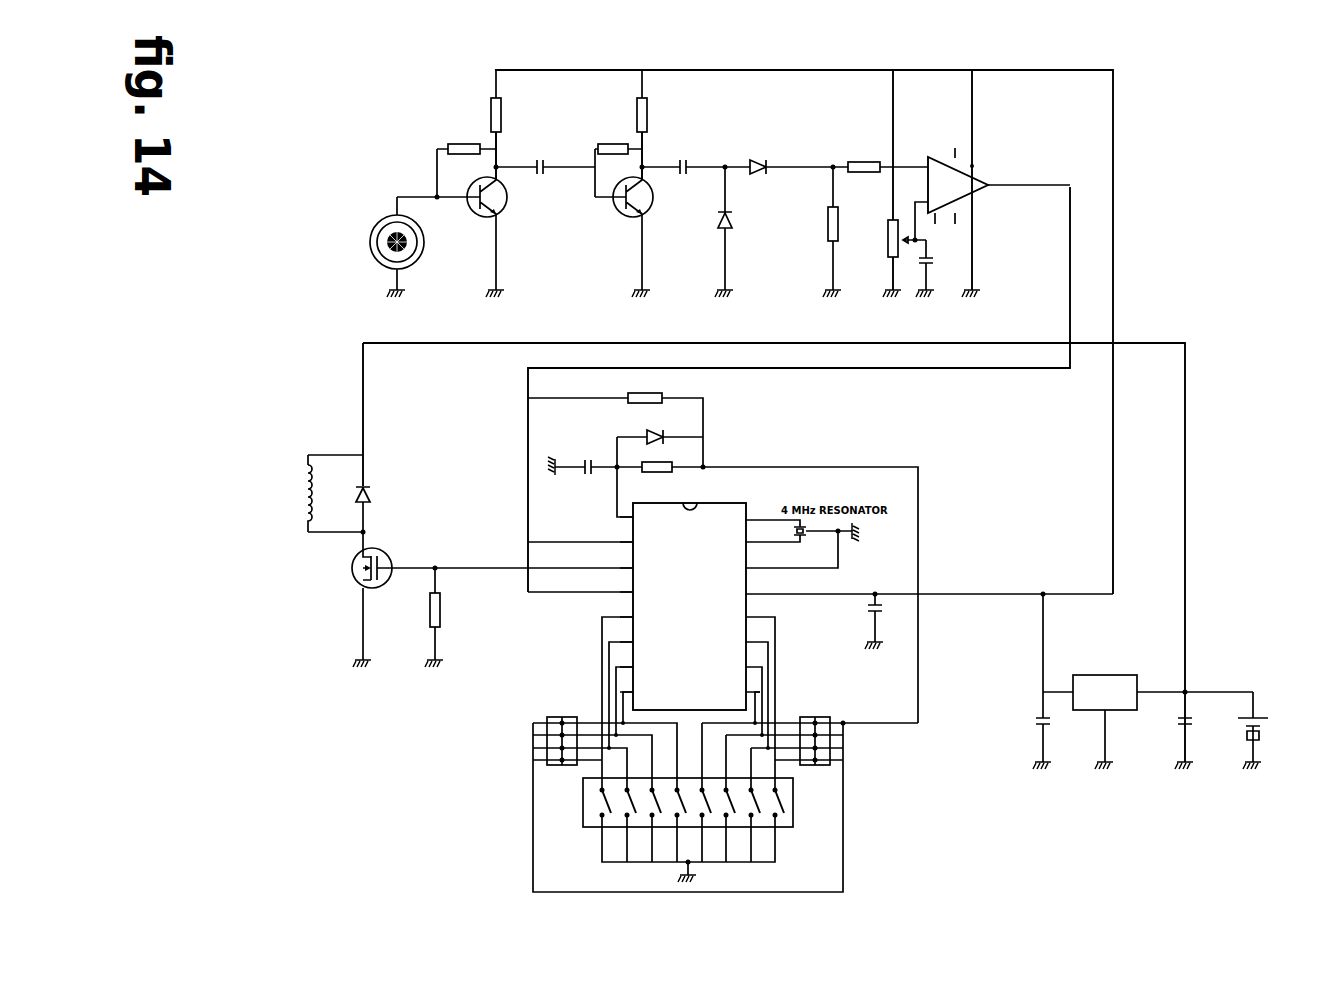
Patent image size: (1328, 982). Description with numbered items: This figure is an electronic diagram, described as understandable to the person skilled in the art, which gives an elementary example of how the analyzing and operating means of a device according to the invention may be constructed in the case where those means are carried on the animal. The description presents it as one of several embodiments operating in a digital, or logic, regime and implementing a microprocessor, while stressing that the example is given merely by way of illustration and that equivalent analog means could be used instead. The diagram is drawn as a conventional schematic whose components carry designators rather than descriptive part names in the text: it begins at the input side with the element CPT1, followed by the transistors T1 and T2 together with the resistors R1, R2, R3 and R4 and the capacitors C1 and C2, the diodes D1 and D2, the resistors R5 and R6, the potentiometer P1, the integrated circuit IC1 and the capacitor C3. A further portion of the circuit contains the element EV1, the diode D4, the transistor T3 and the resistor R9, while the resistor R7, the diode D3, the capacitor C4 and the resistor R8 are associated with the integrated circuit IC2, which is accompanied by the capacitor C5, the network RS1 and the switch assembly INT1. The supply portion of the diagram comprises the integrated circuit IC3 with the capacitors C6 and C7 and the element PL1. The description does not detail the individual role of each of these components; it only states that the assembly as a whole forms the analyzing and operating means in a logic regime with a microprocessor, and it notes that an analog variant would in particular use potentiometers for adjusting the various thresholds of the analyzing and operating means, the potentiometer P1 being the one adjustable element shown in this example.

The microphone / pickup sensor CPT1 is at (398, 246).
The transistor BC547C T1 is at (493, 214).
The resistor 2M2 R1 is at (466, 165).
The resistor 100K R2 is at (512, 125).
The capacitor 22nF C1 is at (545, 162).
The transistor BC547C T2 is at (645, 214).
The resistor 2M2 R3 is at (616, 165).
The resistor 100K R4 is at (658, 125).
The capacitor 22nF C2 is at (683, 162).
The diode BAT85 D1 is at (709, 231).
The diode BAT85 D2 is at (779, 167).
The resistor 2M2 R5 is at (843, 232).
The resistor 10K R6 is at (880, 167).
The potentiometer 1M P1 is at (890, 248).
The comparator MAX406 IC1 is at (987, 187).
The capacitor 100nF C3 is at (939, 268).
The electrovalve coil EV1 is at (316, 493).
The diode 1N4148 D4 is at (384, 505).
The MOSFET IRFD014 T3 is at (393, 601).
The resistor 22K R9 is at (445, 617).
The resistor 470K R7 is at (615, 421).
The diode 1N4148 D3 is at (660, 464).
The capacitor 1uF C4 is at (595, 469).
The resistor 100K R8 is at (779, 587).
The microcontroller MC68HC705K1 IC2 is at (705, 598).
The capacitor 100nF C5 is at (857, 621).
The resistor network RS1 is at (725, 796).
The switch network (DIP switches) INT1 is at (863, 742).
The voltage regulator LM2936Z-5.0 IC3 is at (1148, 701).
The capacitor 10uF C6 is at (1031, 681).
The capacitor 10uF C7 is at (1173, 720).
The battery 6V PL1 is at (1262, 728).